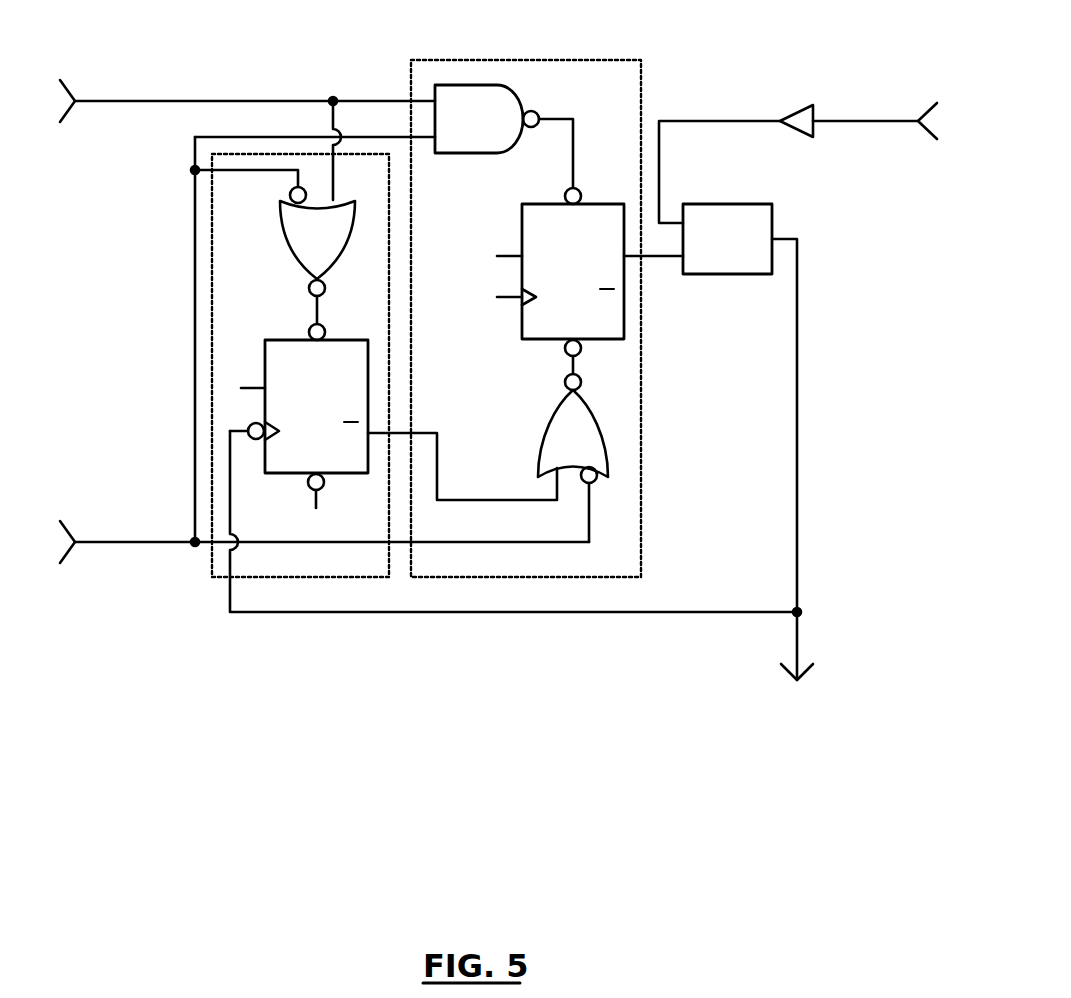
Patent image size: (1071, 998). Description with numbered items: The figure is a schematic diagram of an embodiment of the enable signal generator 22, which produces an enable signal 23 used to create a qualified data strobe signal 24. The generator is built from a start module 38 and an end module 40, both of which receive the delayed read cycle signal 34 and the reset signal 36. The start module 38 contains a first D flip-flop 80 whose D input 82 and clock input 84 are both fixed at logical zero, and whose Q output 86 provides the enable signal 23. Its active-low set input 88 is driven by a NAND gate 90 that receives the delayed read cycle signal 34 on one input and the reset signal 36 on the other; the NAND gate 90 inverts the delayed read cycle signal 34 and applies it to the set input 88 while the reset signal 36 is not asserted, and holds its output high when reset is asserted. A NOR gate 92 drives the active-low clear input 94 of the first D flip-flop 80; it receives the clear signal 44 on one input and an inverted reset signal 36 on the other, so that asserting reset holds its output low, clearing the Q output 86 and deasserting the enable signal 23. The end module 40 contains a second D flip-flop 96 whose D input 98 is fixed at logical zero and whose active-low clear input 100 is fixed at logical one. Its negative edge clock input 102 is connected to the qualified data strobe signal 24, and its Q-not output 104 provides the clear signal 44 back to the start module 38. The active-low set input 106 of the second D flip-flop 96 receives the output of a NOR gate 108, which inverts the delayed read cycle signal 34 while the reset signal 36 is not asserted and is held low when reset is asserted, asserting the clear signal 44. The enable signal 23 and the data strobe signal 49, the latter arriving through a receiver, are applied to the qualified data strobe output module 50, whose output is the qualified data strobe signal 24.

The enable signal generator 22 is at (662, 64).
The enable signal 23 is at (652, 259).
The qualified data strobe signal 24 is at (797, 390).
The delayed read cycle signal 34 is at (234, 101).
The reset signal 36 is at (180, 542).
The start module 38 is at (425, 60).
The end module 40 is at (213, 246).
The clear signal 44 is at (530, 500).
The data strobe signal 49 is at (890, 122).
The qualified data strobe output module 50 is at (724, 204).
The first D flip-flop 80 is at (582, 203).
The D input 82 is at (512, 256).
The clock input 84 is at (511, 300).
The Q output 86 is at (626, 256).
The active-low set input 88 is at (566, 192).
The NAND gate 90 is at (478, 154).
The NOR gate 92 is at (543, 427).
The active-low clear input 94 is at (579, 357).
The second D flip-flop 96 is at (270, 339).
The D input 98 is at (256, 387).
The active-low clear input 100 is at (324, 487).
The negative edge clock input 102 is at (253, 442).
The Q-not output 104 is at (370, 428).
The active-low set input 106 is at (326, 329).
The NOR gate 108 is at (296, 257).